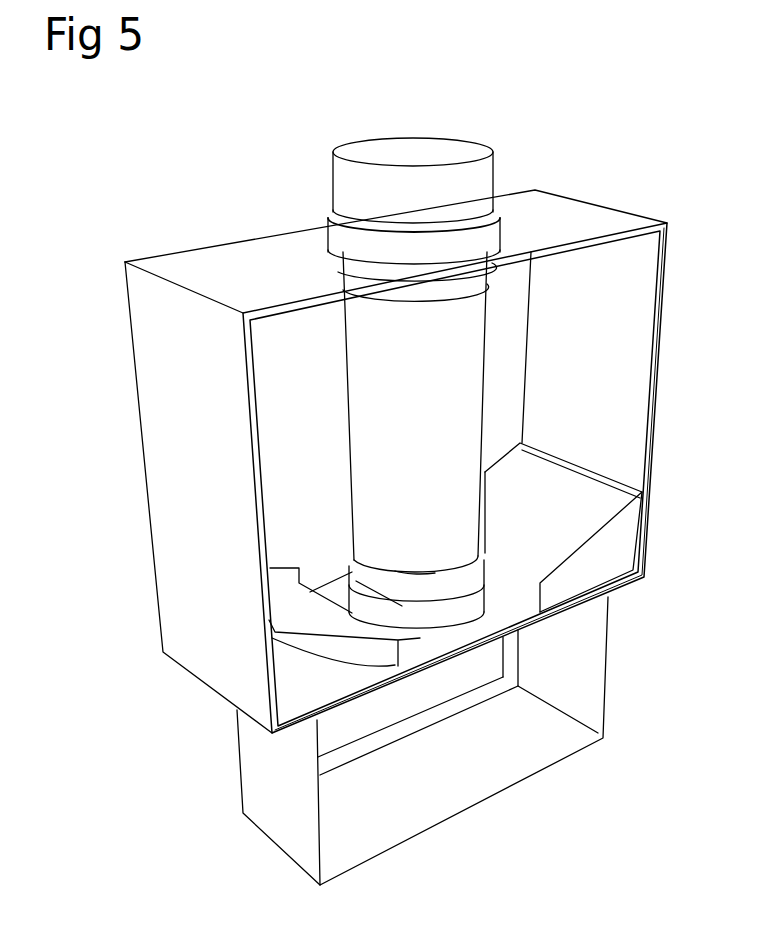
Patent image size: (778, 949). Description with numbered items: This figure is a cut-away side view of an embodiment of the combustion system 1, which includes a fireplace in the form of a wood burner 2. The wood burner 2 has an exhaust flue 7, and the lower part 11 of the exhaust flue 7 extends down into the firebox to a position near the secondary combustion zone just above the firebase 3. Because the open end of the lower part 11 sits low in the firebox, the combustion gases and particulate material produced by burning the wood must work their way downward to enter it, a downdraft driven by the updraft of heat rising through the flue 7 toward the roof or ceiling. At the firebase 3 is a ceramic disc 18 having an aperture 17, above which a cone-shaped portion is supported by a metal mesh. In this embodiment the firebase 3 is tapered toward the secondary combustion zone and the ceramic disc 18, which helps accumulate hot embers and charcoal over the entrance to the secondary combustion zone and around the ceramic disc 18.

The combustion system 1 is at (104, 257).
The wood burner 2 is at (230, 461).
The firebase 3 is at (515, 506).
The exhaust flue 7 is at (445, 191).
The lower part of the exhaust flue 11 is at (458, 418).
The aperture 17 is at (402, 577).
The ceramic disc 18 is at (437, 590).